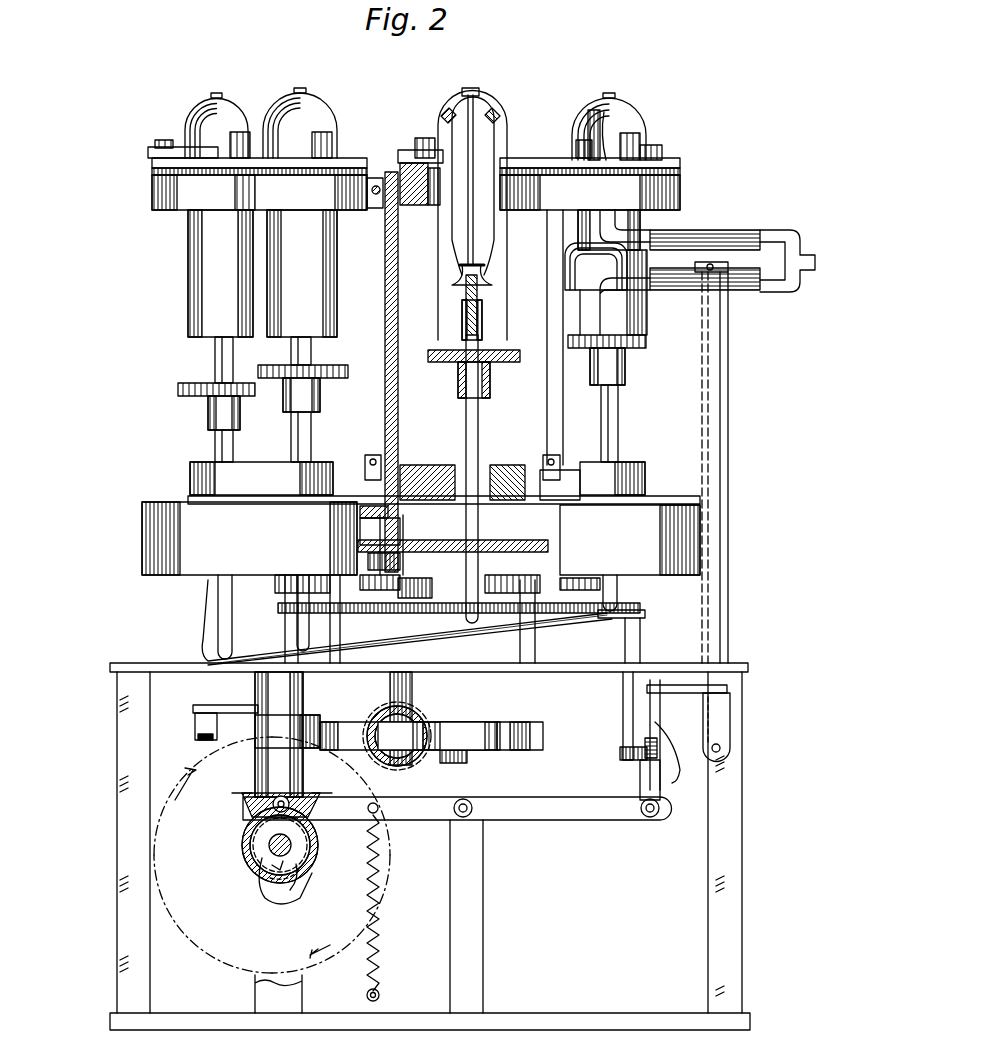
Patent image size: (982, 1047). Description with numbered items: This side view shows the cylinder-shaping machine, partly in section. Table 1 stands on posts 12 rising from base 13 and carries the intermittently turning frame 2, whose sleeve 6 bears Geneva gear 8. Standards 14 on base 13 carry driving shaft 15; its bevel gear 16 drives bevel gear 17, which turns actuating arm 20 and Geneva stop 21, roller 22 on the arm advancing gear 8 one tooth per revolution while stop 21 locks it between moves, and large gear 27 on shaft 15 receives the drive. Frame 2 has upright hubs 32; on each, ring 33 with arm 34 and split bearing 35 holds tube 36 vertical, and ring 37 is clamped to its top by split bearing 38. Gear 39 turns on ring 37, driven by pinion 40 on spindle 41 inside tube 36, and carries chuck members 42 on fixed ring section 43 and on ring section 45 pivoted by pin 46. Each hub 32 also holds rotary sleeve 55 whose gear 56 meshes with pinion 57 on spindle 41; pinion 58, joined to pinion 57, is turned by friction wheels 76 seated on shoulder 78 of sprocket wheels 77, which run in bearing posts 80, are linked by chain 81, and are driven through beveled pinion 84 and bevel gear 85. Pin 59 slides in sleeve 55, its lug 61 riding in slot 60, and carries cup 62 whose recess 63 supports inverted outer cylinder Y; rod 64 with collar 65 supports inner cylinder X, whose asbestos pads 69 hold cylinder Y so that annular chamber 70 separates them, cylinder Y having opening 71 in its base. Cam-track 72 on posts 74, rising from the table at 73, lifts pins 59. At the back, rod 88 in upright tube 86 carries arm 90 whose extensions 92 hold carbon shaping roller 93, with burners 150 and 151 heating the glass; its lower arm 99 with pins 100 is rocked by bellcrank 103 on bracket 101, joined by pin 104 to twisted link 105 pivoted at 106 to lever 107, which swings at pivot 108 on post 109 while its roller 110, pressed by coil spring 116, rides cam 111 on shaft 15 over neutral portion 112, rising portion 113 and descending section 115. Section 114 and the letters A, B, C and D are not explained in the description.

The table 1 is at (118, 664).
The horizontal frame or spider 2 is at (142, 508).
The sleeve 6 is at (458, 706).
The Geneva gear 8 is at (528, 722).
The posts 12 is at (735, 842).
The base 13 is at (525, 1014).
The aligned standards 14 is at (258, 993).
The rotary driving shaft 15 is at (270, 848).
The bevel gear 16 is at (243, 842).
The bevel gear 17 is at (245, 806).
The actuating arm 20 is at (216, 705).
The Geneva stop 21 is at (262, 735).
The roller 22 is at (195, 723).
The large gear 27 is at (395, 905).
The hubs 32 is at (182, 498).
The sleeve or ring 33 is at (330, 468).
The arm 34 is at (412, 466).
The split bearing 35 is at (372, 458).
The tube 36 is at (385, 298).
The ring 37 is at (160, 205).
The split bearing 38 is at (370, 176).
The gear 39 is at (152, 170).
The pinion 40 is at (400, 158).
The spindle 41 is at (385, 262).
The holding members 42 is at (175, 140).
The ring section 43 is at (664, 152).
The ring section 45 is at (593, 112).
The pin 46 is at (608, 112).
The sleeve 55 is at (215, 345).
The gear 56 is at (548, 546).
The pinion 57 is at (362, 530).
The pinion 58 is at (368, 560).
The pin 59 is at (218, 598).
The axial slot 60 is at (466, 423).
The lug or dowel 61 is at (458, 380).
The cup 62 is at (178, 389).
The circular recess 63 is at (436, 355).
The rod 64 is at (477, 108).
The collar 65 is at (455, 283).
The asbestos pads 69 is at (452, 105).
The annular chamber 70 is at (488, 178).
The small opening 71 is at (472, 88).
The cam-track 72 is at (627, 638).
The rising point of cam-track 73 is at (205, 658).
The posts 74 is at (640, 628).
The friction wheels 76 is at (297, 575).
The sprocket wheels 77 is at (290, 597).
The annular flange or shoulder 78 is at (432, 590).
The bearing posts 80 is at (318, 623).
The sprocket chain 81 is at (450, 628).
The beveled pinion 84 is at (378, 710).
The bevel gear 85 is at (375, 760).
The upright tube 86 is at (728, 447).
The rod 88 is at (728, 400).
The forwardly extending arm 90 is at (690, 245).
The extensions 92 is at (606, 232).
The rotary shaping roller 93 is at (582, 290).
The arm 99 is at (680, 690).
The pins or rollers 100 is at (632, 712).
The bracket 101 is at (647, 697).
The bellcrank 103 is at (681, 775).
The pin 104 is at (622, 752).
The twisted link 105 is at (660, 800).
The pivot 106 is at (648, 818).
The lever 107 is at (520, 815).
The pivot 108 is at (473, 803).
The post or bracket 109 is at (470, 917).
The roller 110 is at (290, 793).
The cam 111 is at (290, 881).
The concentric or neutral portion 112 is at (262, 822).
The rising portion 113 is at (265, 860).
The spring 114 is at (285, 898).
The cam section 115 is at (306, 876).
The coil spring 116 is at (380, 958).
The upper burners 150 is at (775, 231).
The lower burners 151 is at (776, 292).
The chamber A is at (207, 105).
The chamber B is at (318, 102).
The chamber C is at (475, 105).
The chamber D is at (628, 110).
The inner cylinder X is at (487, 194).
The outer cylinder Y is at (510, 250).